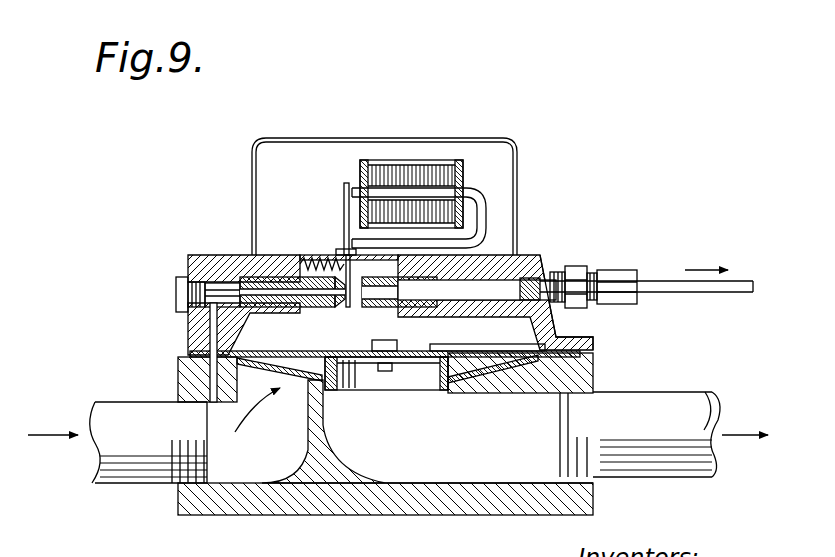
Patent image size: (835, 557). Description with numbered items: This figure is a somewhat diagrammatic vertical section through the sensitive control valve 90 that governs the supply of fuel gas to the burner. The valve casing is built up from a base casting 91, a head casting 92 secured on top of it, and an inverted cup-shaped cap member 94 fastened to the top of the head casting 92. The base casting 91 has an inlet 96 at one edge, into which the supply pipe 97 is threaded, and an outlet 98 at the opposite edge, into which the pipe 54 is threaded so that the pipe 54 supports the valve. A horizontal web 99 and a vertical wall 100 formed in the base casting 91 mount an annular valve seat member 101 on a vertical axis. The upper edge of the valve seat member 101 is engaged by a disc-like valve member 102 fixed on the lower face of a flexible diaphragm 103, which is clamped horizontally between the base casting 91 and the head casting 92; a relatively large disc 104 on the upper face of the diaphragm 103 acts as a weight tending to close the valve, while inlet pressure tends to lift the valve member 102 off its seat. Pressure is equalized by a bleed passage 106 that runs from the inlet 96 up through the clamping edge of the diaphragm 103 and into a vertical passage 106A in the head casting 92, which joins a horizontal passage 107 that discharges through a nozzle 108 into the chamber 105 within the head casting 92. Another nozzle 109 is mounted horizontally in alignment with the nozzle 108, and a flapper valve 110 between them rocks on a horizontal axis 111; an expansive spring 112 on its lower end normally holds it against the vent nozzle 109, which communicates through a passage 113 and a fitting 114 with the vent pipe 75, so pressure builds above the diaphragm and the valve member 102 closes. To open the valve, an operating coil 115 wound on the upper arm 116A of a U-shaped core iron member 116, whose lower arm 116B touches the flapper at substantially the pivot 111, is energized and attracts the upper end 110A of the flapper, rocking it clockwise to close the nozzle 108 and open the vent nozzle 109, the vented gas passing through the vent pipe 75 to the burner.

The cap member 94 is at (516, 149).
The operating coil 115 is at (422, 162).
The upper arm 116A is at (418, 200).
The lower arm 116B is at (420, 250).
The U-shaped core iron member 116 is at (478, 210).
The upper end of the flapper member 110A is at (343, 190).
The flapper valve 110 is at (347, 308).
The horizontal axis 111 is at (343, 248).
The expansive spring 112 is at (302, 256).
The chamber 105 is at (247, 328).
The horizontal passage 107 is at (220, 288).
The nozzle 108 is at (318, 306).
The vent nozzle 109 is at (392, 308).
The control valve 90 is at (527, 219).
The head casting 92 is at (541, 258).
The vent pipe 75 is at (690, 292).
The passage 113 is at (550, 276).
The fitting 114 is at (588, 276).
The disc 104 is at (352, 351).
The valve member 102 is at (445, 351).
The flexible diaphragm 103 is at (500, 344).
The annular valve seat member 101 is at (430, 392).
The bleed passage 106 is at (215, 370).
The vertical passage 106A is at (213, 335).
The horizontal web 99 is at (478, 392).
The vertical wall 100 is at (322, 414).
The base casting 91 is at (297, 508).
The inlet 96 is at (235, 488).
The outlet 98 is at (470, 478).
The supply pipe 97 is at (140, 470).
The pipe 54 is at (678, 465).